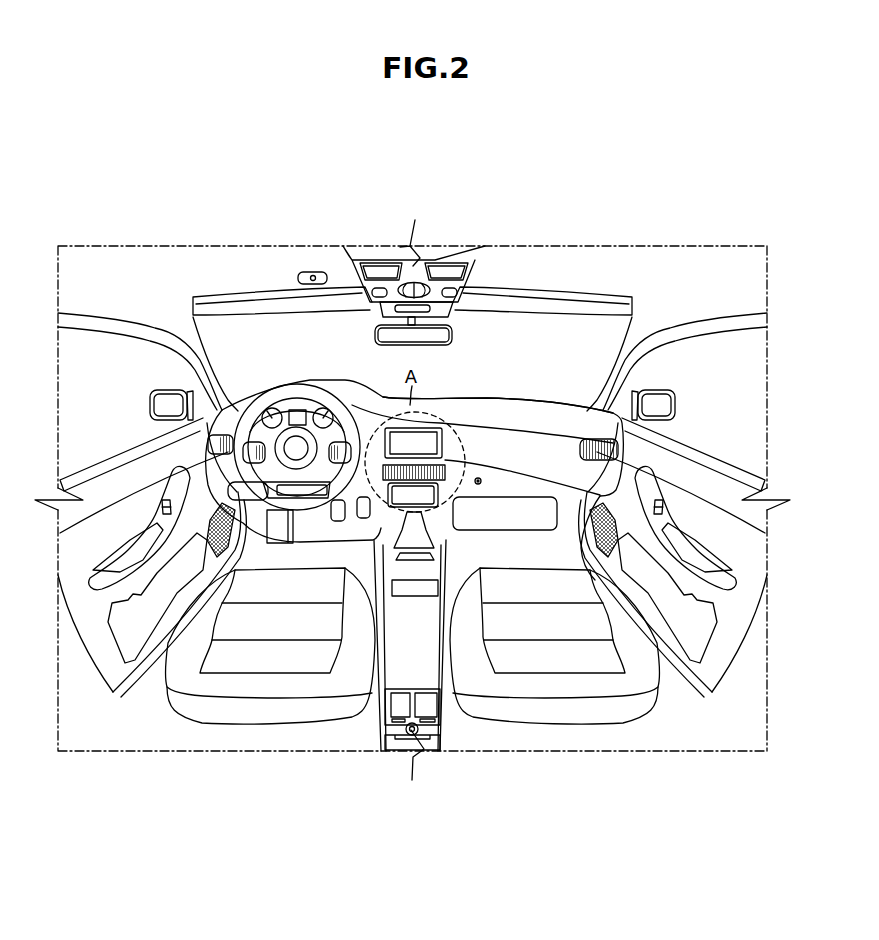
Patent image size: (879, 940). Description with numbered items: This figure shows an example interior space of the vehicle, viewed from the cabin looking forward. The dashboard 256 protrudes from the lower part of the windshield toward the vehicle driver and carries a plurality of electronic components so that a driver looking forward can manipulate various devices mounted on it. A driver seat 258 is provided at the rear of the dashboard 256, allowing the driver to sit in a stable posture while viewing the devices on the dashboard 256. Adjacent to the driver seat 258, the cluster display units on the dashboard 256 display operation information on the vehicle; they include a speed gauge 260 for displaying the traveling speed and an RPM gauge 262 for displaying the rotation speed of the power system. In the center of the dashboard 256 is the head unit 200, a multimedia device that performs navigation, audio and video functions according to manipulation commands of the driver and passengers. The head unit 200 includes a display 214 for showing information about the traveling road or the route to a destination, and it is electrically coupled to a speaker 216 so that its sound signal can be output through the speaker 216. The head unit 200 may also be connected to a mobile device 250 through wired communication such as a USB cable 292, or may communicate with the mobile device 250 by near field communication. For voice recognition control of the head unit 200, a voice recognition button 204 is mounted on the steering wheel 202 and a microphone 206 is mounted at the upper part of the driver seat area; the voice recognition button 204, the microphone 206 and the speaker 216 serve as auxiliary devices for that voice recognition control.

The head unit 200 is at (443, 438).
The steering wheel 202 is at (241, 431).
The voice recognition button 204 is at (255, 453).
The microphone 206 is at (314, 290).
The display 214 is at (431, 425).
The speaker 216 is at (240, 535).
The mobile device 250 is at (447, 497).
The dashboard 256 is at (546, 420).
The driver seat 258 is at (267, 725).
The speed gauge 260 is at (275, 410).
The RPM gauge 262 is at (322, 410).
The USB cable 292 is at (486, 476).